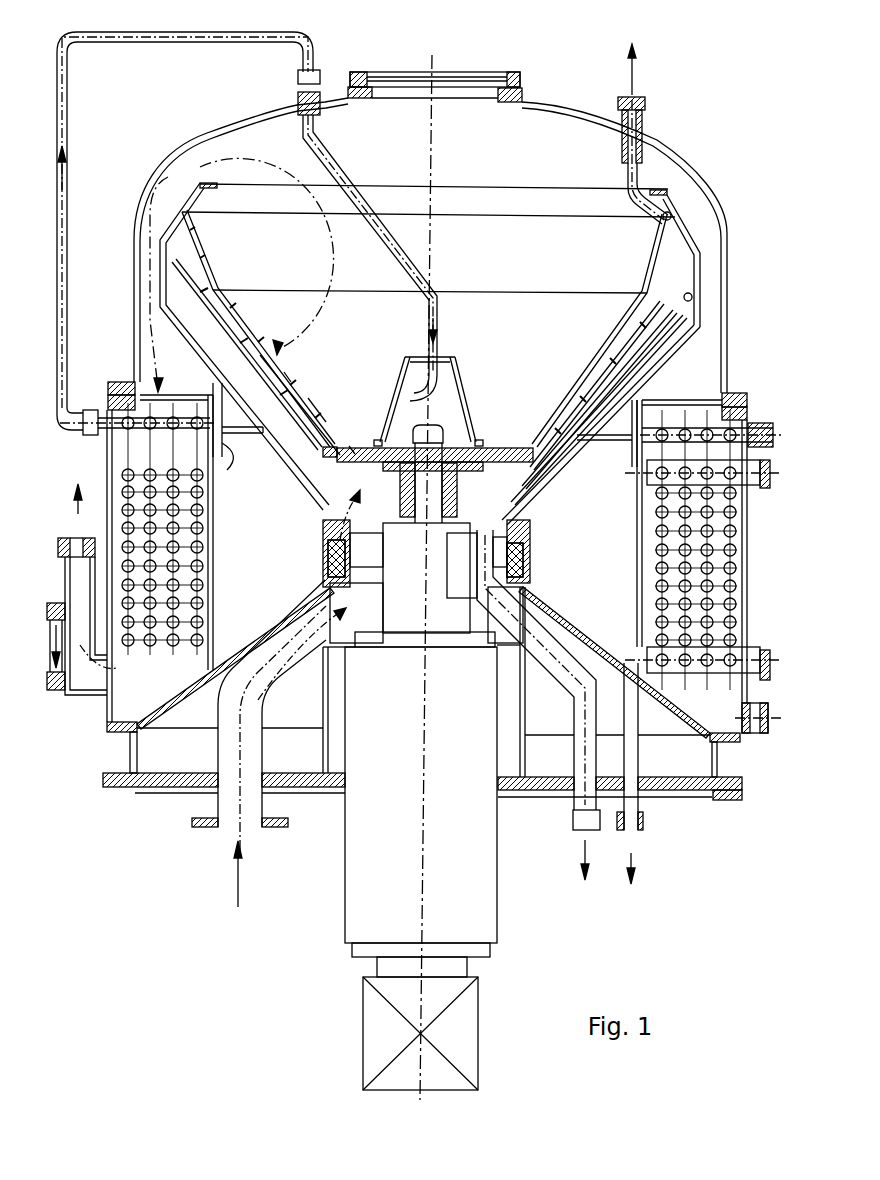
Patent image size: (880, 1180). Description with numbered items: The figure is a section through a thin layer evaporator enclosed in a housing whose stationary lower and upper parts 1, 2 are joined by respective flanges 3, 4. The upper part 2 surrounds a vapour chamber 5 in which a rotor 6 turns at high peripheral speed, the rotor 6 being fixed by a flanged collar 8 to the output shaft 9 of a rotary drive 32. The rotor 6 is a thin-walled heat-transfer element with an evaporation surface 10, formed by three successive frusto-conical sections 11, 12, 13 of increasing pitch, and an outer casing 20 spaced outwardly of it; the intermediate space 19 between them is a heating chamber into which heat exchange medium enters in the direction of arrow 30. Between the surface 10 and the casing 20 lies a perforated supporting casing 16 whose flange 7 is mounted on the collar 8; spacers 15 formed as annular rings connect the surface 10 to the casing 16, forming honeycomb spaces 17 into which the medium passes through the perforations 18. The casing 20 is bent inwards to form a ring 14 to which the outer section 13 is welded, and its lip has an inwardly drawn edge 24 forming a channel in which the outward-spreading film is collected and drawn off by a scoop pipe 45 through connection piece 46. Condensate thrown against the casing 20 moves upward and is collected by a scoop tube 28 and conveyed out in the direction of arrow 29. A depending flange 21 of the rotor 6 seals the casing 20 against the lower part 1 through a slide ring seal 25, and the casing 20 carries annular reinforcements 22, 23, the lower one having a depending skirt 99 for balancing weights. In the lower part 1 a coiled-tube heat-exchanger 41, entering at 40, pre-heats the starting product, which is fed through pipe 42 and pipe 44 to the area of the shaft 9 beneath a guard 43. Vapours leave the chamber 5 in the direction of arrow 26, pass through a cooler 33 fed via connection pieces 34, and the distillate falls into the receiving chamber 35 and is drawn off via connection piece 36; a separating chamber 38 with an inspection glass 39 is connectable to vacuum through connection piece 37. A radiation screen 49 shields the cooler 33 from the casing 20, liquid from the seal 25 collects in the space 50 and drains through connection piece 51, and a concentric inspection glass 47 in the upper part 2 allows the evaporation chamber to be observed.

The lower housing part 1 is at (177, 790).
The upper housing part 2 is at (692, 167).
The flange 3 is at (116, 402).
The flange 4 is at (118, 384).
The vapour chamber 5 is at (537, 140).
The rotor 6 is at (462, 186).
The flange 7 is at (508, 448).
The flanged collar 8 is at (455, 510).
The output shaft 9 is at (400, 492).
The evaporation surface 10 is at (207, 273).
The first frusto-conical section 11 is at (320, 410).
The second frusto-conical section 12 is at (260, 353).
The outer frusto-conical section 13 is at (200, 253).
The ring 14 is at (158, 282).
The spacers 15 is at (263, 383).
The supporting casing 16 is at (678, 277).
The honeycomb spaces 17 is at (580, 373).
The perforations 18 is at (313, 430).
The intermediate space 19 is at (327, 477).
The outer casing 20 is at (547, 492).
The depending flange 21 is at (530, 540).
The annular reinforcement 22 is at (680, 347).
The lower annular reinforcement 23 is at (240, 435).
The inwardly drawn edge 24 is at (200, 187).
The slide ring seal 25 is at (327, 553).
The arrow 26 is at (228, 167).
The scoop tube 28 is at (700, 277).
The arrow 29 is at (587, 880).
The arrow 30 is at (237, 905).
The rotary drive 32 is at (362, 1017).
The cooler 33 is at (657, 585).
The connection pieces 34 is at (753, 472).
The receiving chamber 35 is at (723, 727).
The connection piece 36 is at (760, 742).
The connection piece 37 is at (72, 538).
The separating chamber 38 is at (90, 673).
The inspection glass 39 is at (57, 692).
The heat-exchanger inlet 40 is at (763, 423).
The coiled-tube heat-exchanger 41 is at (124, 380).
The pipe 42 is at (70, 140).
The guard 43 is at (455, 375).
The pipe 44 is at (424, 318).
The scoop pipe 45 is at (658, 230).
The connection piece 46 is at (618, 107).
The inspection glass 47 is at (465, 75).
The radiation screen 49 is at (212, 613).
The space 50 is at (335, 612).
The connection piece 51 is at (622, 840).
The depending skirt 99 is at (227, 470).